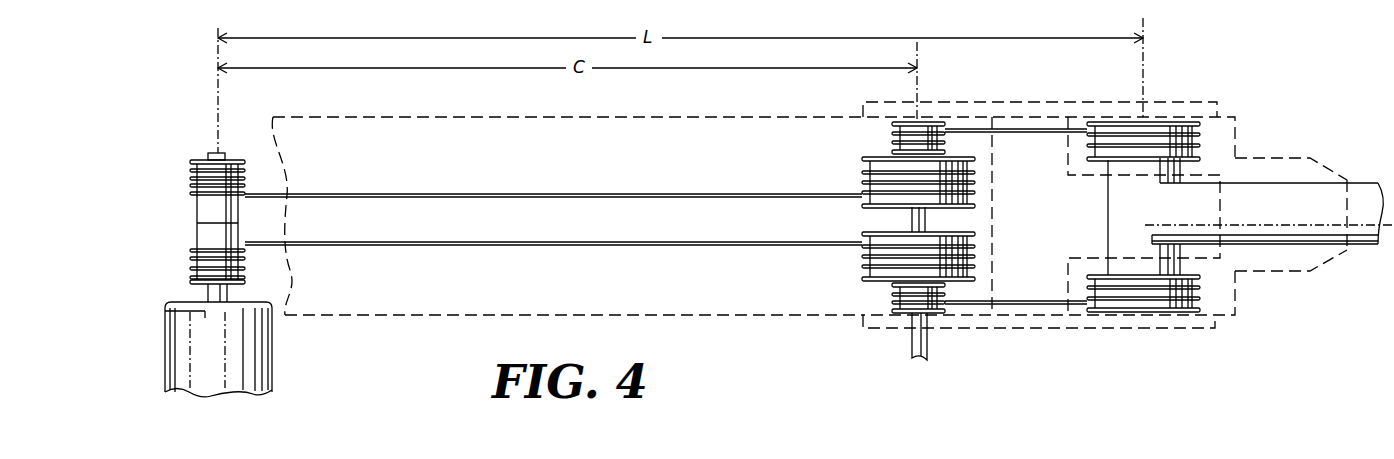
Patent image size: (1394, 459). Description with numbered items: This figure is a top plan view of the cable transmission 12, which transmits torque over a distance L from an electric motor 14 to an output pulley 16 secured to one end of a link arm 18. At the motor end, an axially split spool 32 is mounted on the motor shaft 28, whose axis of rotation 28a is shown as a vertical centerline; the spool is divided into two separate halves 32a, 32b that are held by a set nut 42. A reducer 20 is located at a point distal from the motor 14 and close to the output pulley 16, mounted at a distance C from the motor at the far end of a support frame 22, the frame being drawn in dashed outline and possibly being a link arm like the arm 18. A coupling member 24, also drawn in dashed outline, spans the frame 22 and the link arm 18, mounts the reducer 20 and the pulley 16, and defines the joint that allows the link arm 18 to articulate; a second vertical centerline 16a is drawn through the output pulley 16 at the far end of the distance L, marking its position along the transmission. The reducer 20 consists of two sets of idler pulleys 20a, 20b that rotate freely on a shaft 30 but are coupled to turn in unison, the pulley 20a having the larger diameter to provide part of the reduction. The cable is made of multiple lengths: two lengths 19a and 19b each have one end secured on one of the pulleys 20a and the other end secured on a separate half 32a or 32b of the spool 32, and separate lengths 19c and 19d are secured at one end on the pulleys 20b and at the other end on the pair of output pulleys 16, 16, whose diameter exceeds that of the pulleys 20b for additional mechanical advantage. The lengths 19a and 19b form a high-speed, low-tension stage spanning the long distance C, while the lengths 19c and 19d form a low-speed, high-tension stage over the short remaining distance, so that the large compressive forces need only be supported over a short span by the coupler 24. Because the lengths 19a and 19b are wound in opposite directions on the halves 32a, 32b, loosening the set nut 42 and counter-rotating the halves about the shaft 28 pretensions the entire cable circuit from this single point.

The cable transmission 12 is at (627, 321).
The electric motor 14 is at (268, 348).
The output pulley 16 is at (1178, 121).
The axis of output pulley 16a is at (1143, 52).
The link arm 18 is at (1358, 184).
The cable length 19a is at (585, 195).
The cable length 19b is at (589, 243).
The cable length 19c is at (1012, 133).
The cable length 19d is at (1012, 302).
The reducer 20 is at (966, 250).
The idler pulley 20a is at (890, 148).
The idler pulley 20b is at (862, 232).
The support frame 22 is at (487, 117).
The coupling member 24 is at (991, 103).
The motor shaft 28 is at (226, 297).
The axis of rotation 28a is at (218, 98).
The shaft 30 is at (912, 339).
The axially split spool 32 is at (184, 226).
The spool half 32a is at (233, 213).
The spool half 32b is at (238, 231).
The set nut 42 is at (226, 158).